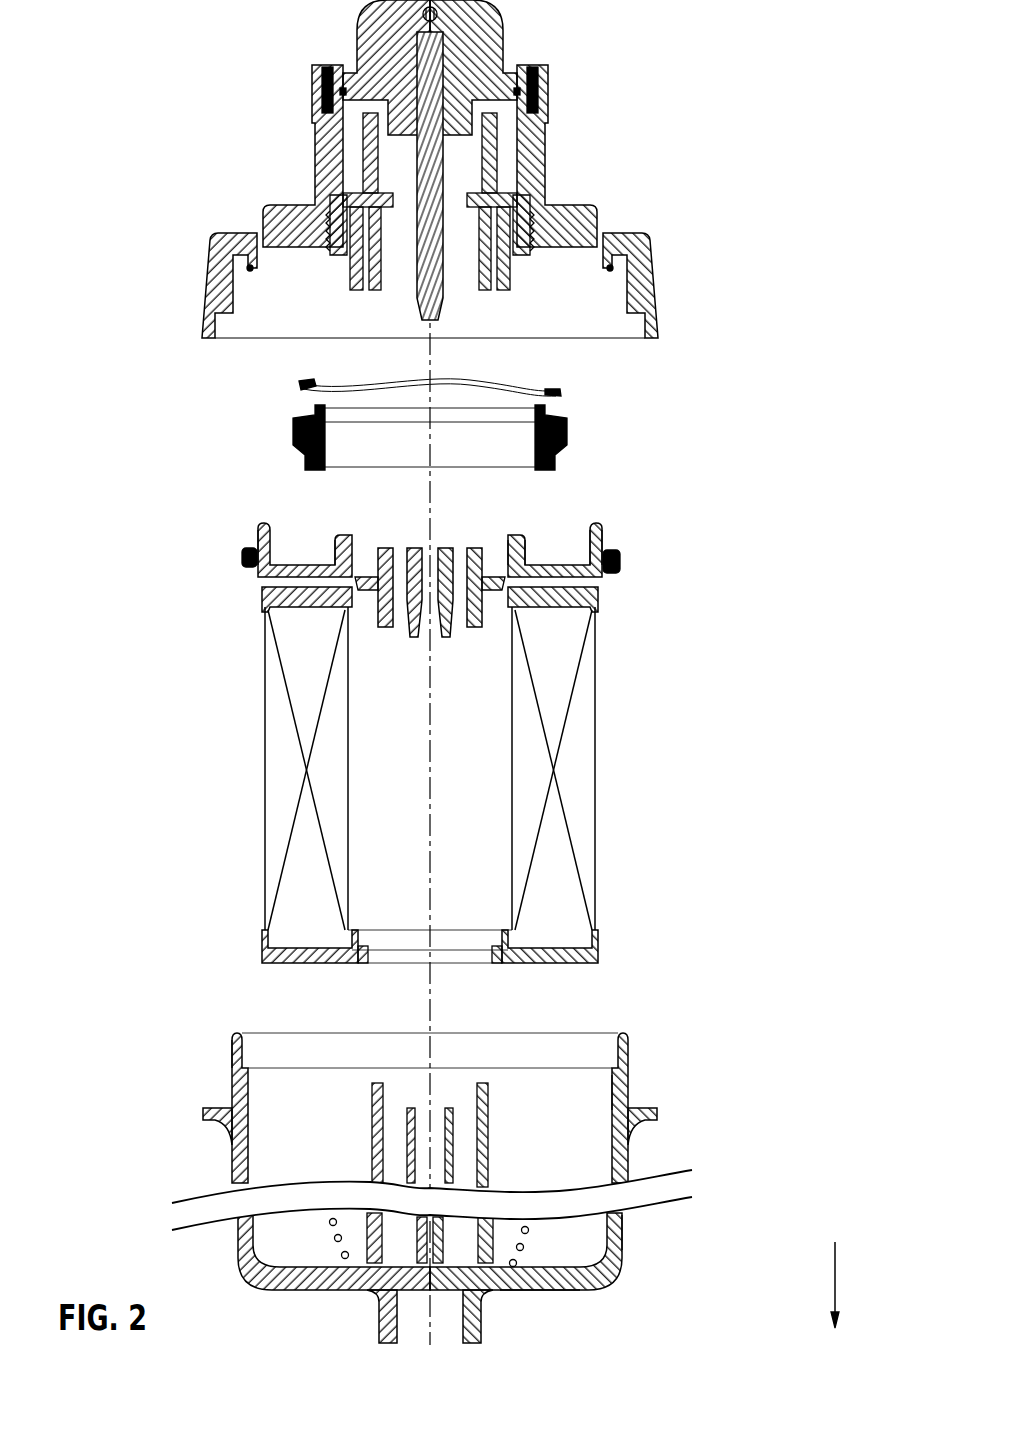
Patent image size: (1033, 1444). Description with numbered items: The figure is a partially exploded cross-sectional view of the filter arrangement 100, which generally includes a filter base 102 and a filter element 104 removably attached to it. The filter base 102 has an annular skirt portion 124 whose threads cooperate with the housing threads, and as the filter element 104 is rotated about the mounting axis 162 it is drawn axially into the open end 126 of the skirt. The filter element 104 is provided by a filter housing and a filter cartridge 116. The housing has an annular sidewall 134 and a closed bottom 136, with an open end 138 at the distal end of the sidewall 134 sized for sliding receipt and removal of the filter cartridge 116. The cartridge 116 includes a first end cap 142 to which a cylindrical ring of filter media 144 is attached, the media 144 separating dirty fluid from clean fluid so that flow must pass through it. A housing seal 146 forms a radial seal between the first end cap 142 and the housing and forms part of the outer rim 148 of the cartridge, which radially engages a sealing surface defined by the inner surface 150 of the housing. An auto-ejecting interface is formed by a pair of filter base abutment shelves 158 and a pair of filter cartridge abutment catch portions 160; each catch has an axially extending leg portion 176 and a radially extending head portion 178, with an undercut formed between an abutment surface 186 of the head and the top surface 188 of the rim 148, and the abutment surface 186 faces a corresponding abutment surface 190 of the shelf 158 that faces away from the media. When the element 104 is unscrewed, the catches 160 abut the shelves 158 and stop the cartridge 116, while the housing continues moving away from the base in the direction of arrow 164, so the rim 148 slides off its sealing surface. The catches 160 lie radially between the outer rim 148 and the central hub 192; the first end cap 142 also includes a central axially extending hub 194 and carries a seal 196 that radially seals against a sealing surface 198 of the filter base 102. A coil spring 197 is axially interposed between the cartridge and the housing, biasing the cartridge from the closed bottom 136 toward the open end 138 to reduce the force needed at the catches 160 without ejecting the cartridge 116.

The filter arrangement 100 is at (120, 1256).
The filter base 102 is at (660, 62).
The filter element 104 is at (505, 1161).
The filter cartridge 116 is at (536, 775).
The annular skirt portion 124 is at (650, 276).
The open end 126 is at (205, 342).
The annular sidewall 134 is at (625, 1233).
The closed bottom 136 is at (575, 1286).
The open end 138 is at (233, 1046).
The first end cap 142 is at (580, 562).
The cylindrical ring of filter media 144 is at (590, 762).
The housing seal 146 is at (620, 566).
The outer rim 148 is at (464, 521).
The inner surface 150 is at (610, 1103).
The filter base abutment shelves 158 is at (258, 270).
The filter cartridge abutment catch portions 160 is at (283, 552).
The mounting axis 162 is at (430, 995).
The arrow 164 is at (835, 1256).
The leg portion 176 is at (606, 541).
The head portion 178 is at (601, 524).
The abutment surface 186 is at (258, 532).
The top surface 188 is at (245, 550).
The abutment surface 190 is at (262, 232).
The central hub 192 is at (318, 520).
The central axially extending hub 194 is at (535, 547).
The seal 196 is at (508, 548).
The coil spring 197 is at (332, 1224).
The sealing surface 198 is at (505, 289).